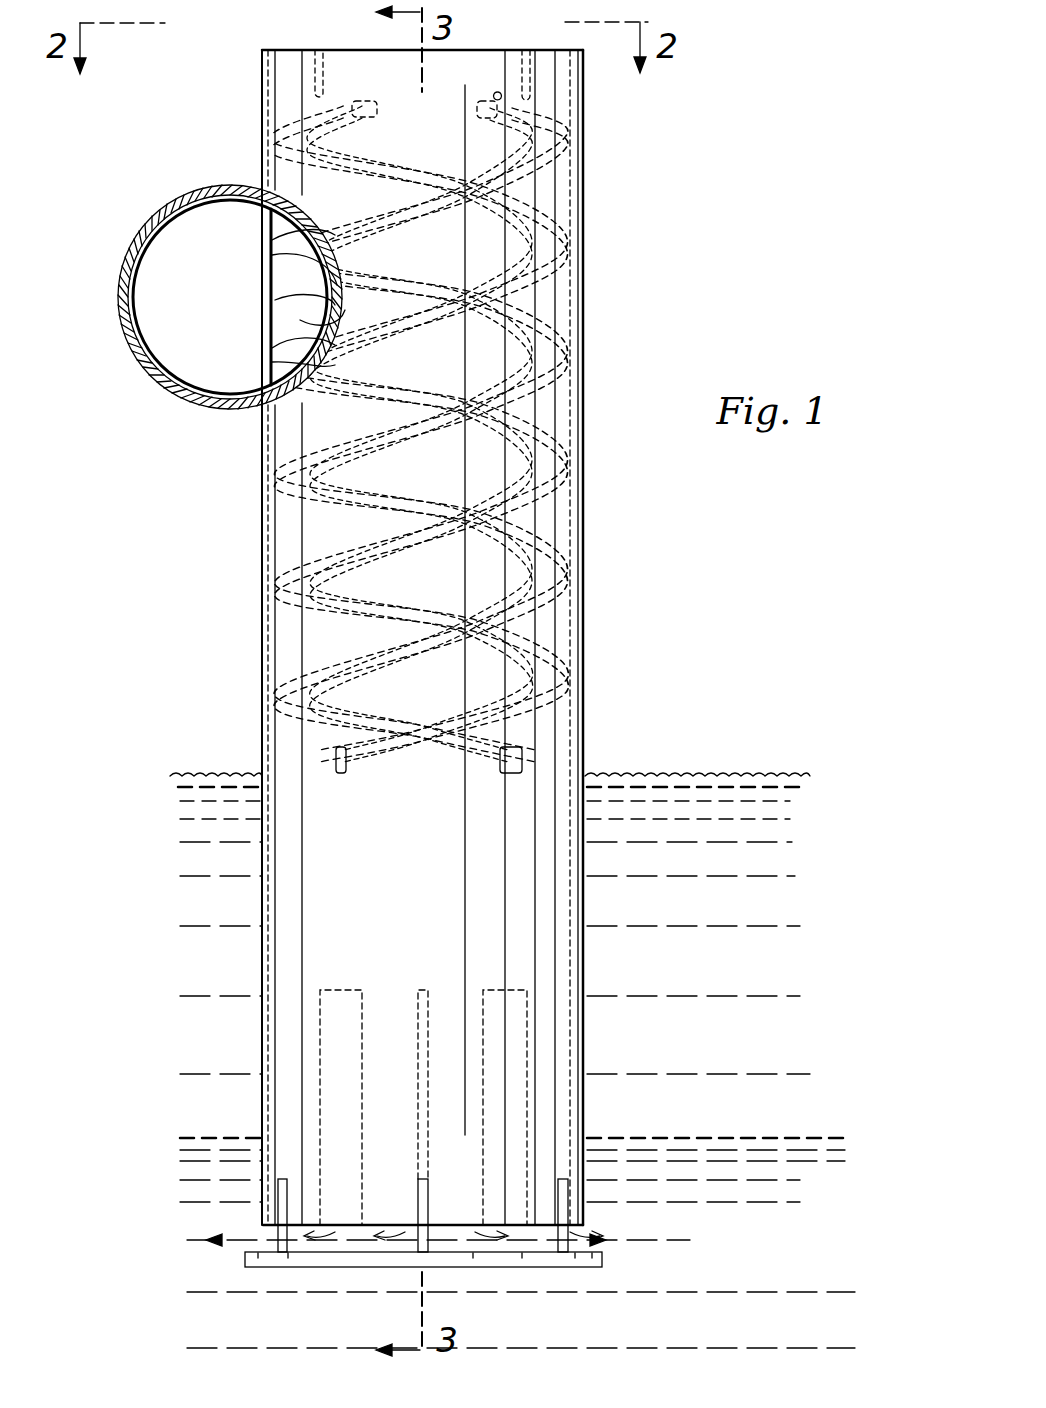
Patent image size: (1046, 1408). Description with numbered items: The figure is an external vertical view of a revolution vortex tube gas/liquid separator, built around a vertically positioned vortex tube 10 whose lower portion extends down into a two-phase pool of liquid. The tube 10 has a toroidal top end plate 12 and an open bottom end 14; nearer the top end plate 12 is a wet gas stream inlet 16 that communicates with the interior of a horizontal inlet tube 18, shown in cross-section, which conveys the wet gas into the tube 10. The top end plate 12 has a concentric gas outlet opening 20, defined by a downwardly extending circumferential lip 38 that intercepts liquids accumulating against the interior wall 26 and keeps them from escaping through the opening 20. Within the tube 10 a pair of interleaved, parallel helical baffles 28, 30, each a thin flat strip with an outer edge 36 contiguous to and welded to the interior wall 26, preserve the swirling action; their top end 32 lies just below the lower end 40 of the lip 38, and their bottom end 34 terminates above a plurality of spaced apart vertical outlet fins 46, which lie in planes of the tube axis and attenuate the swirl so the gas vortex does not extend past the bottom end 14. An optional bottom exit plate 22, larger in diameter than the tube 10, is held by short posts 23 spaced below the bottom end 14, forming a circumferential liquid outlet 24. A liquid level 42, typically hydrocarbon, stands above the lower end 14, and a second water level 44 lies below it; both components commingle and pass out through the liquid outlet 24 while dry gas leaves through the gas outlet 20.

The vortex tube 10 is at (585, 205).
The top end plate 12 is at (290, 52).
The bottom end 14 is at (530, 1225).
The wet gas stream inlet 16 is at (292, 288).
The inlet tube 18 is at (136, 256).
The gas outlet opening 20 is at (505, 48).
The bottom exit plate 22 is at (495, 1268).
The short posts 23 is at (282, 1185).
The circumferential liquid outlet 24 is at (272, 1235).
The interior wall 26 is at (270, 305).
The helical baffle 28 is at (572, 133).
The helical baffle 30 is at (272, 133).
The helical baffle top end 32 is at (377, 114).
The helical baffle bottom end 34 is at (342, 772).
The outer edge 36 is at (335, 292).
The circumferential lip 38 is at (318, 80).
The lower end of circumferential lip 40 is at (497, 92).
The liquid level 42 is at (703, 775).
The second water level 44 is at (703, 1138).
The vertical outlet fins 46 is at (292, 1040).